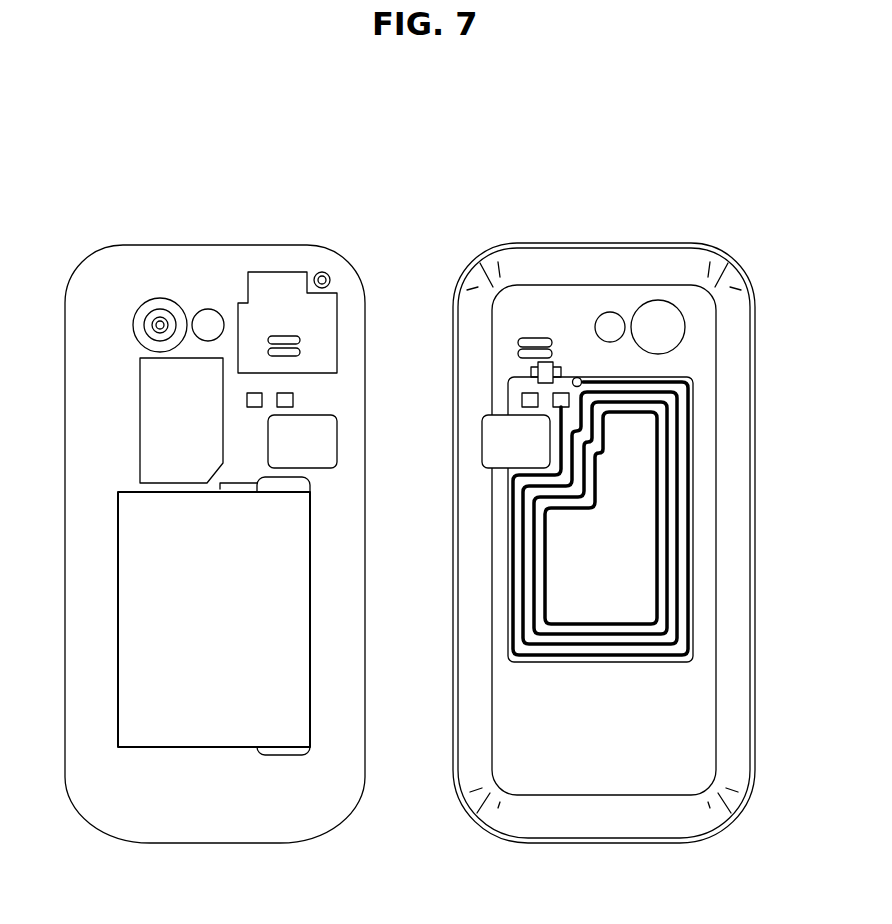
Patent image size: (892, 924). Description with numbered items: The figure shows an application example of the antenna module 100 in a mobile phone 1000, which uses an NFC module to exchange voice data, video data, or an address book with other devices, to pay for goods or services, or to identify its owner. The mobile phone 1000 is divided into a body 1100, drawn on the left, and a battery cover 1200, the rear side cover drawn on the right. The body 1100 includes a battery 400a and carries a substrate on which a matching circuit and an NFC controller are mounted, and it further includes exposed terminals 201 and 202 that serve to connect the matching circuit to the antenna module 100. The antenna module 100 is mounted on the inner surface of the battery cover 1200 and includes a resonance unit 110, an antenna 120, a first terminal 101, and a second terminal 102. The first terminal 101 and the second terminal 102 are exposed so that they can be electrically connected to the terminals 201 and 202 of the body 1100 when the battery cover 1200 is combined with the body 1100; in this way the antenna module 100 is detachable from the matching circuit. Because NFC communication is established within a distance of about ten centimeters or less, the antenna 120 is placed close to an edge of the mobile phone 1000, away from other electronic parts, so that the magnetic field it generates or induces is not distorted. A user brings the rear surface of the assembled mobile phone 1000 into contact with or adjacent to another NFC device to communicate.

The mobile phone 1000 is at (670, 138).
The body 1100 is at (330, 250).
The battery cover 1200 is at (717, 252).
The terminal 201 is at (287, 390).
The terminal 202 is at (255, 390).
The battery 400a is at (241, 646).
The antenna module 100 is at (585, 456).
The antenna 120 is at (600, 622).
The resonance unit 110 is at (550, 362).
The first terminal 101 is at (527, 392).
The second terminal 102 is at (565, 392).